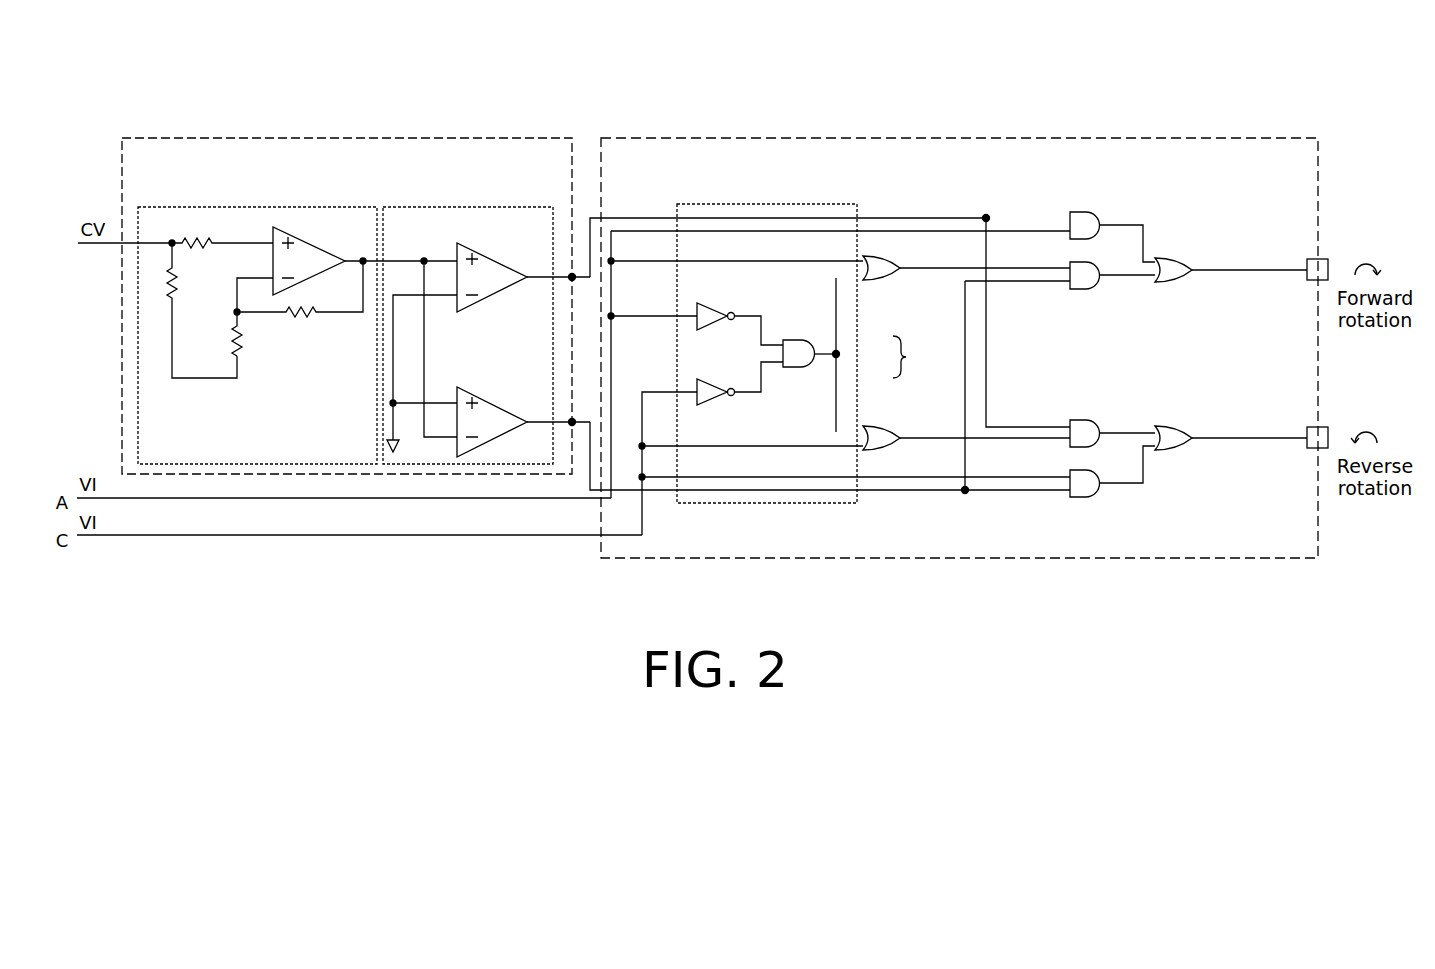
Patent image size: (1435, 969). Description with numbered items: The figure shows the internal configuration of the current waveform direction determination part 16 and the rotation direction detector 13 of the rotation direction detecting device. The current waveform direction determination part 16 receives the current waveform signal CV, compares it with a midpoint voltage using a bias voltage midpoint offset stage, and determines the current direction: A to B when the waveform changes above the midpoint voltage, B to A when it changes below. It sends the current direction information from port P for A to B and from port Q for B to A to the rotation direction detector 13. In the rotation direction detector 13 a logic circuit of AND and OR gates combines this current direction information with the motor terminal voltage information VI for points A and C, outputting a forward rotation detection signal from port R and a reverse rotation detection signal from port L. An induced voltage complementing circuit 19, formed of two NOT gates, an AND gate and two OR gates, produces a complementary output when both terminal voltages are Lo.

The current waveform direction determination part 16 is at (435, 137).
The rotation direction detector 13 is at (850, 137).
The induced voltage complementing circuit 19 is at (766, 203).